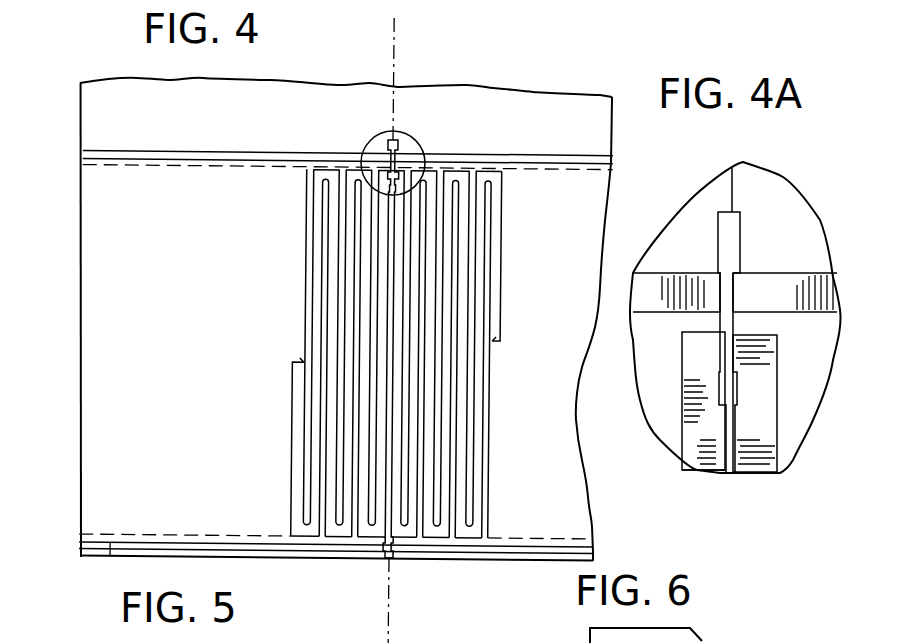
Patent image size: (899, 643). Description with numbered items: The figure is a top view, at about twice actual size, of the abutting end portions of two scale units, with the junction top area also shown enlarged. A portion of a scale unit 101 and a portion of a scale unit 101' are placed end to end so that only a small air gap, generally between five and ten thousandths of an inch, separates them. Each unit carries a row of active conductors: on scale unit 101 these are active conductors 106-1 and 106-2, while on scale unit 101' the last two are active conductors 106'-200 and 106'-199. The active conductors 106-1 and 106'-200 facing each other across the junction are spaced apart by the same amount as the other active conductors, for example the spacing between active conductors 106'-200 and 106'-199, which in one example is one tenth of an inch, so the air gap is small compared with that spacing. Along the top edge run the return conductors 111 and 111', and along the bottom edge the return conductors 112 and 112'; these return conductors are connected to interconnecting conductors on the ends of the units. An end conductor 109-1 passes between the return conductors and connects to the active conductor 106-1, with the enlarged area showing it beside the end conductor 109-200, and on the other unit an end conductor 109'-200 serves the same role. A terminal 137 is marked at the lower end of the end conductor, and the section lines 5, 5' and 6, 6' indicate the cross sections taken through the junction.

In FIG. 4, the scale unit 101 is at (568, 308).
In FIG. 4A, the scale unit 101 is at (735, 301).
In FIG. 4, the scale unit 101' is at (318, 315).
In FIG. 4A, the scale unit 101' is at (706, 179).
In FIG. 4, the return conductor 111 is at (347, 183).
In FIG. 4A, the return conductor 111 is at (785, 273).
In FIG. 4, the return conductor 111' is at (321, 131).
In FIG. 4A, the return conductor 111' is at (676, 275).
In FIG. 4, the end conductor 109-1 is at (313, 118).
In FIG. 4A, the end conductor 109-1 is at (737, 355).
In FIG. 4, the active conductor 106-1 is at (402, 212).
In FIG. 4A, the active conductor 106-1 is at (762, 453).
In FIG. 4, the active conductor 106-2 is at (418, 222).
In FIG. 4, the end conductor 109'-200 is at (306, 355).
In FIG. 4, the active conductor 106'-200 is at (293, 346).
In FIG. 4A, the active conductor 106'-200 is at (682, 472).
In FIG. 4, the active conductor 106'-199 is at (282, 346).
In FIG. 4A, the end conductor 109-200 is at (720, 350).
In FIG. 4, the return conductor 112 is at (336, 521).
In FIG. 4, the return conductor 112' is at (331, 564).
In FIG. 4, the lead terminal 137 is at (395, 561).
In FIG. 4, the section line 5 is at (408, 600).
In FIG. 4, the section line 5' is at (421, 79).
In FIG. 4, the section line 6 is at (359, 590).
In FIG. 4, the section line 6' is at (364, 50).